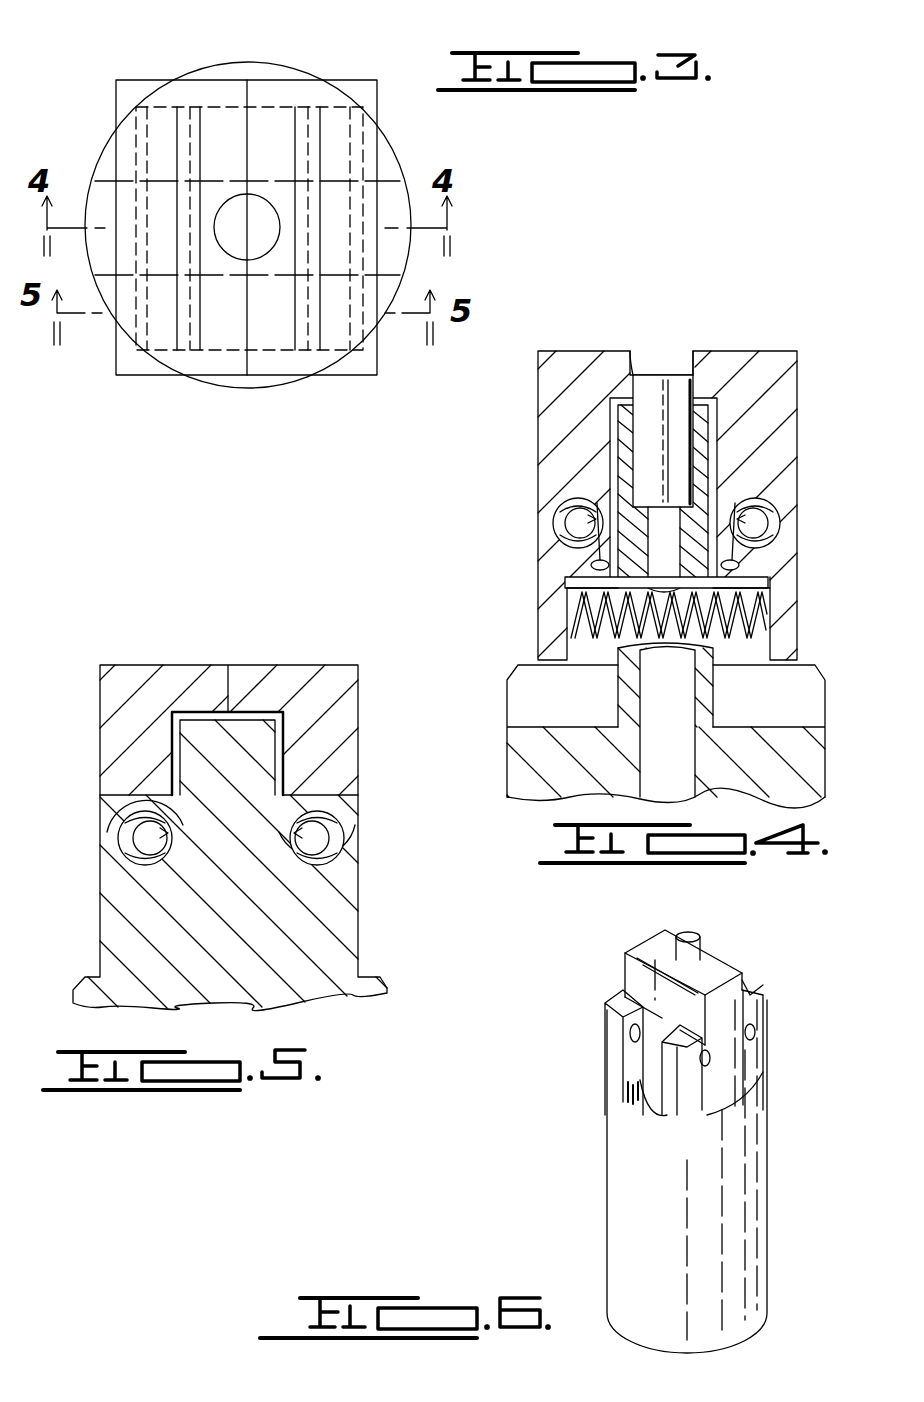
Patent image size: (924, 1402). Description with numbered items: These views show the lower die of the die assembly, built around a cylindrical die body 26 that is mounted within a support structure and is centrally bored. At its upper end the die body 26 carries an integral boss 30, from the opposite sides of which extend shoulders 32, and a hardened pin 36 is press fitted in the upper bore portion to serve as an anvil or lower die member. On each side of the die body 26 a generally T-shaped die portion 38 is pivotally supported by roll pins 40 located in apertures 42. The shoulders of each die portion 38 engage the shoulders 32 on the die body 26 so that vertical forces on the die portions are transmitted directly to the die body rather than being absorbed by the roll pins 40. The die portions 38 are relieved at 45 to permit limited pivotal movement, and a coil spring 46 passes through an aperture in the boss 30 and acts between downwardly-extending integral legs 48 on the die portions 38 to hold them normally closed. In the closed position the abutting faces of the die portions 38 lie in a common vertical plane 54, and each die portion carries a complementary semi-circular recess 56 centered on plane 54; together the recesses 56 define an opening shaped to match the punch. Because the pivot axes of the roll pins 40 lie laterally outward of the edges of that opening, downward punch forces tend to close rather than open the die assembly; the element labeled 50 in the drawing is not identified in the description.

In FIG. 3, the die body 26 is at (105, 170).
In FIG. 4, the die body 26 is at (800, 757).
In FIG. 5, the die body 26 is at (143, 916).
In FIG. 6, the die body 26 is at (622, 1220).
In FIG. 4, the boss 30 is at (702, 442).
In FIG. 5, the boss 30 is at (237, 735).
In FIG. 6, the boss 30 is at (733, 988).
In FIG. 5, the shoulders 32 is at (320, 793).
In FIG. 6, the shoulders 32 is at (617, 999).
In FIG. 4, the hardened pin 36 is at (645, 445).
In FIG. 6, the hardened pin 36 is at (700, 945).
In FIG. 3, the die portion 38 is at (125, 90).
In FIG. 4, the die portion 38 is at (772, 362).
In FIG. 5, the die portion 38 is at (115, 695).
In FIG. 4, the roll pins 40 is at (555, 509).
In FIG. 5, the roll pins 40 is at (125, 840).
In FIG. 4, the apertures 42 is at (560, 532).
In FIG. 5, the apertures 42 is at (130, 857).
In FIG. 6, the apertures 42 is at (629, 1034).
In FIG. 4, the relief 45 is at (596, 561).
In FIG. 4, the coil spring 46 is at (748, 617).
In FIG. 4, the legs 48 is at (553, 622).
In FIG. 4, the plate 50 is at (712, 584).
In FIG. 6, the plate 50 is at (650, 1090).
In FIG. 3, the vertical plane 54 is at (250, 96).
In FIG. 3, the semi-circular recess 56 is at (262, 203).
In FIG. 4, the semi-circular recess 56 is at (675, 350).